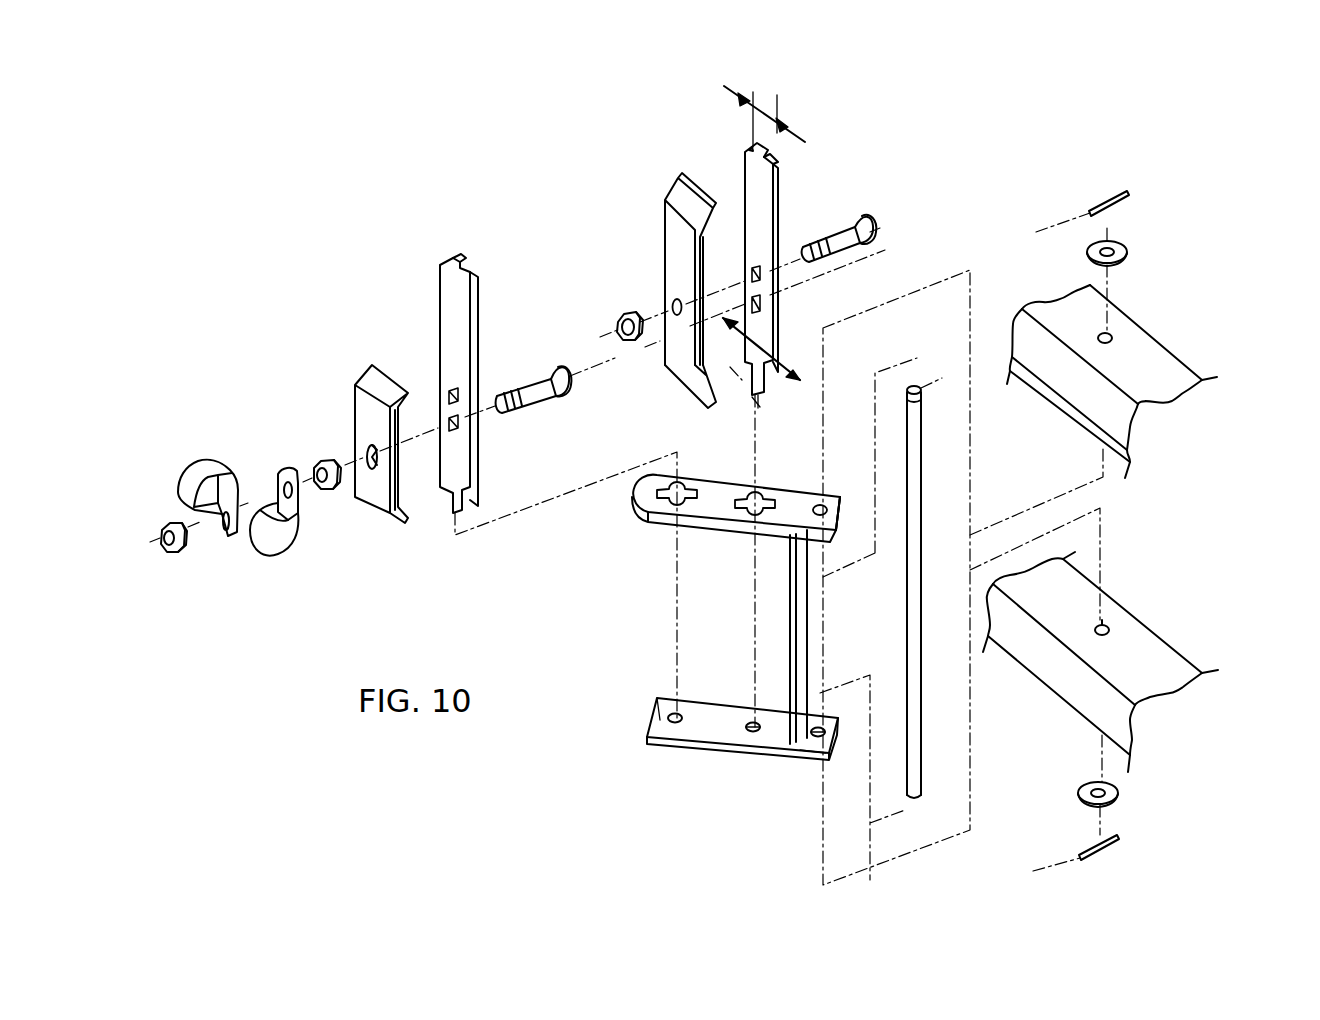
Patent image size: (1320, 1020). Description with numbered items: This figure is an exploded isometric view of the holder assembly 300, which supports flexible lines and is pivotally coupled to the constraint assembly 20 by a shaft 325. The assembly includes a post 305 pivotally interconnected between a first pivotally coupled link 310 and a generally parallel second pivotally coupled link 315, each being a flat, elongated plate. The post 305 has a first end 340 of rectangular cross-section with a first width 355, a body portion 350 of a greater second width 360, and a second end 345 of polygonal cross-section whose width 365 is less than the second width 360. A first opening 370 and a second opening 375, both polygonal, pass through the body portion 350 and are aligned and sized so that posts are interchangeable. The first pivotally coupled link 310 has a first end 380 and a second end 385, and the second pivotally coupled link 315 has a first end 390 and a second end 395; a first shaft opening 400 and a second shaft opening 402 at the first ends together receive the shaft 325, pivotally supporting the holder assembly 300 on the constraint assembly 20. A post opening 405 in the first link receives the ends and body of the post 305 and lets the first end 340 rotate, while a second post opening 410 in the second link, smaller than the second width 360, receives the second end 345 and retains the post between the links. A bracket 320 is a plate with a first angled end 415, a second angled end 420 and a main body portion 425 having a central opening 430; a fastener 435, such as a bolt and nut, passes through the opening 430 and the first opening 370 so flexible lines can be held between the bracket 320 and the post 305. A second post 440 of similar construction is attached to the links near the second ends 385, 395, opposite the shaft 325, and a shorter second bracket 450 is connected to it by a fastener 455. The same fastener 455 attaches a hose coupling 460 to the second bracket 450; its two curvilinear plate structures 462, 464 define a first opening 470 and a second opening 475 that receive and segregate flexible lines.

The constraint assembly 20 is at (1168, 325).
The holder assembly 300 is at (1060, 106).
The post 305 is at (786, 186).
The first pivotally coupled link 310 is at (637, 511).
The second pivotally coupled link 315 is at (657, 745).
The bracket 320 is at (670, 322).
The shaft 325 is at (921, 497).
The first end 340 is at (736, 132).
The second end 345 is at (766, 402).
The body portion 350 is at (790, 236).
The first width 355 is at (805, 142).
The second width 360 is at (780, 349).
The width 365 is at (747, 408).
The first opening 370 is at (774, 283).
The second opening 375 is at (774, 305).
The first end 380 is at (834, 486).
The second end 385 is at (630, 491).
The first end 390 is at (809, 770).
The second end 395 is at (640, 713).
The first shaft opening 400 is at (836, 540).
The second shaft opening 402 is at (822, 740).
The post opening 405 is at (740, 518).
The second post opening 410 is at (752, 735).
The first angled end 415 is at (660, 180).
The second angled end 420 is at (695, 407).
The main body portion 425 is at (675, 263).
The opening 430 is at (672, 313).
The fastener 435 is at (884, 218).
The second post 440 is at (528, 290).
The second bracket 450 is at (365, 510).
The fastener 455 is at (542, 366).
The hose coupling 460 is at (300, 445).
The plate structure 462 is at (178, 488).
The plate structure 464 is at (298, 548).
The first opening 470 is at (204, 516).
The second opening 475 is at (281, 553).